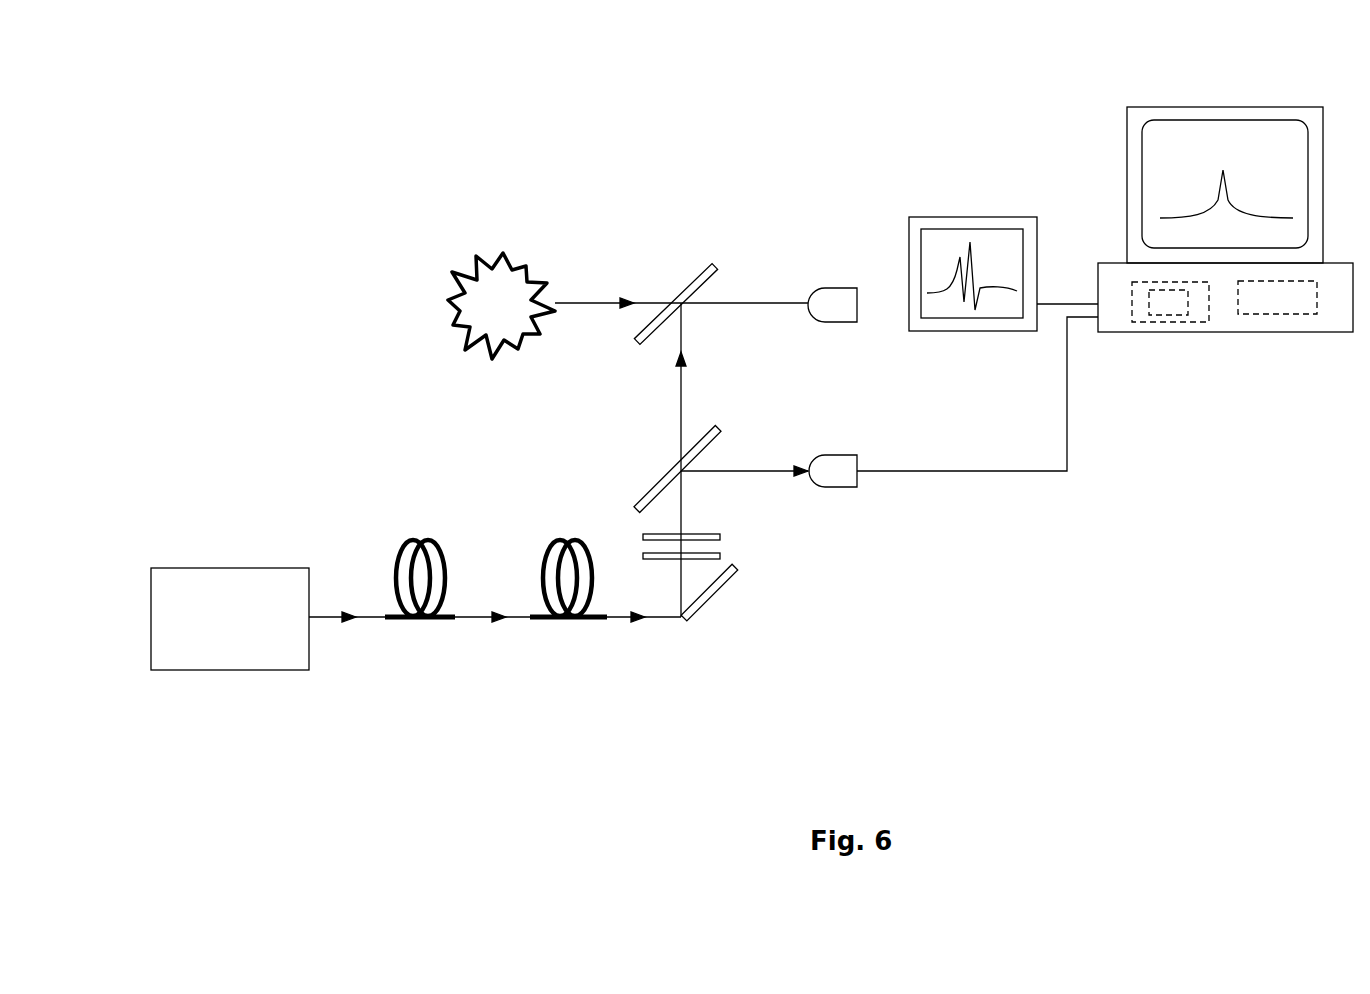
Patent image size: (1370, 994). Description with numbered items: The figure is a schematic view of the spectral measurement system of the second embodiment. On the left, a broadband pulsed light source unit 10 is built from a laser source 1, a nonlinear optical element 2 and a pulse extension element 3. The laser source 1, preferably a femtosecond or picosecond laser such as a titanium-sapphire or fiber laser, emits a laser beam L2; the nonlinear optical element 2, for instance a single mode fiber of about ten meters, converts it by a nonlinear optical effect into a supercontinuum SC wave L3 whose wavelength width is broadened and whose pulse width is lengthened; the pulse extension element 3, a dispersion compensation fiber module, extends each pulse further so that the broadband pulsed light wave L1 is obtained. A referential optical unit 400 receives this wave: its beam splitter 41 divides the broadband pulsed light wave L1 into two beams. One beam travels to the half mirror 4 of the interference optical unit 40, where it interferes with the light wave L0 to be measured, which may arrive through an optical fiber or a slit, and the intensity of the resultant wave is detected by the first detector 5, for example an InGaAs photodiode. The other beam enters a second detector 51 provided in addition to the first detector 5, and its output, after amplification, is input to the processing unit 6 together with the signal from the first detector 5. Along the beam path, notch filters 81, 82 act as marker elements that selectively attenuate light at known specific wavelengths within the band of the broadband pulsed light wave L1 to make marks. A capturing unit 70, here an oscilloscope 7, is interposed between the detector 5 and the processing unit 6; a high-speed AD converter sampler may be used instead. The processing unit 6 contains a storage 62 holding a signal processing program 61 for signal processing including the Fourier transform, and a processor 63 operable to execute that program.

The laser source 1 is at (250, 568).
The nonlinear optical element 2 is at (418, 540).
The pulse extension element 3 is at (557, 540).
The half mirror 4 is at (697, 277).
The detector 5 is at (845, 322).
The processing unit 6 is at (1097, 95).
The oscilloscope 7 is at (973, 331).
The broadband pulsed light source unit 10 is at (358, 715).
The interference optical unit 40 is at (643, 230).
The beam splitter 41 is at (660, 475).
The referential optical unit 400 is at (730, 417).
The second detector 51 is at (845, 487).
The signal processing program 61 is at (1178, 315).
The storage 62 is at (1150, 322).
The processor 63 is at (1275, 314).
The capturing unit 70 is at (903, 203).
The notch filter 81 is at (720, 556).
The notch filter 82 is at (720, 537).
The light wave to be measured L0 is at (590, 300).
The broadband pulsed light wave L1 is at (678, 403).
The laser beam L2 is at (337, 612).
The SC wave L3 is at (485, 612).